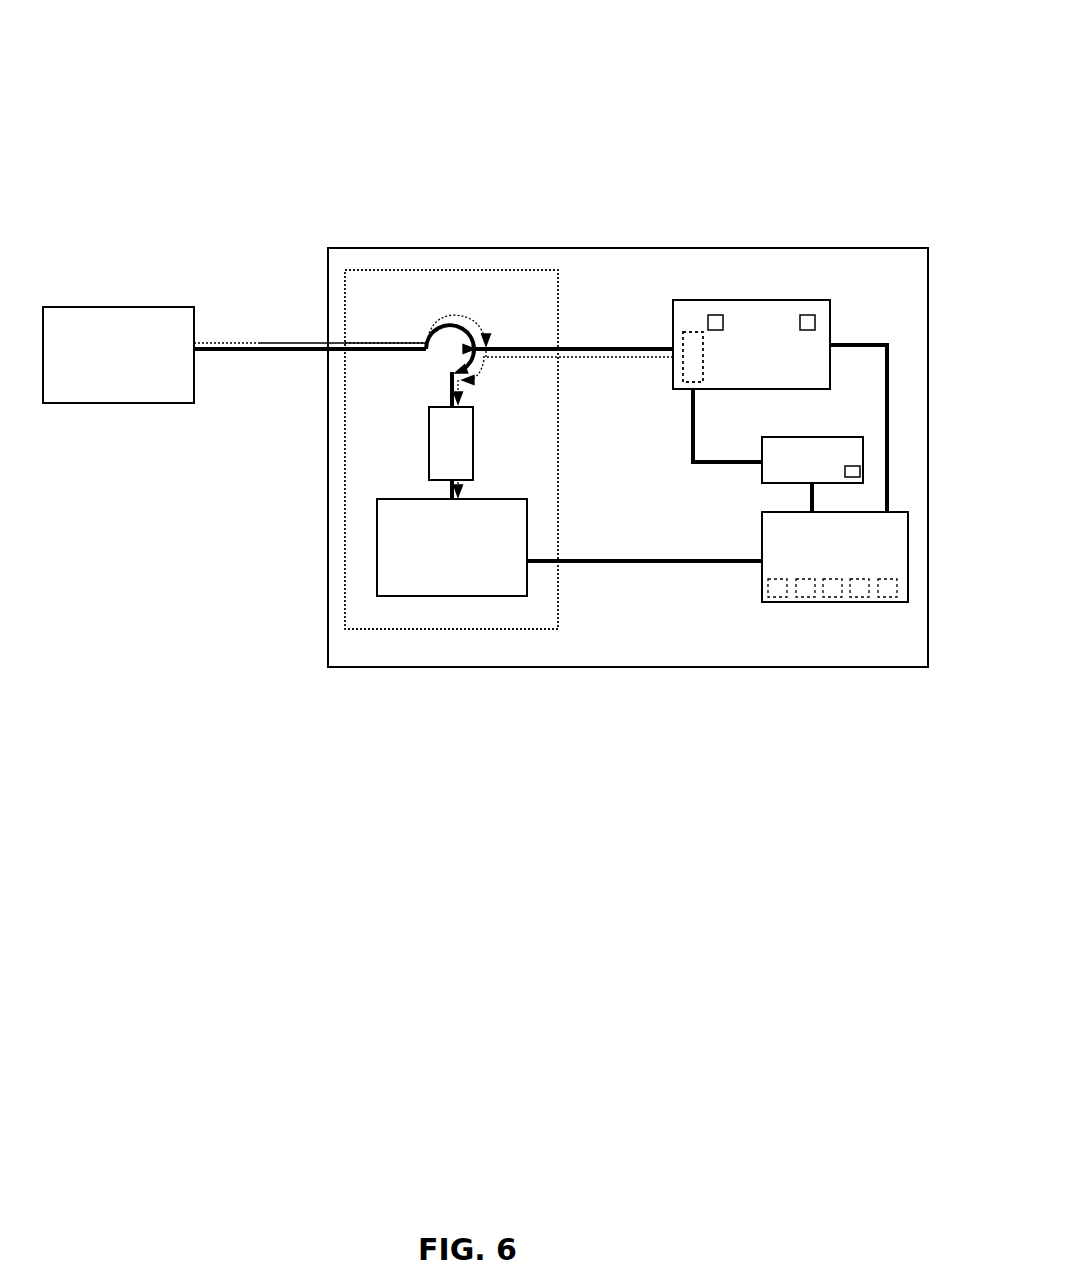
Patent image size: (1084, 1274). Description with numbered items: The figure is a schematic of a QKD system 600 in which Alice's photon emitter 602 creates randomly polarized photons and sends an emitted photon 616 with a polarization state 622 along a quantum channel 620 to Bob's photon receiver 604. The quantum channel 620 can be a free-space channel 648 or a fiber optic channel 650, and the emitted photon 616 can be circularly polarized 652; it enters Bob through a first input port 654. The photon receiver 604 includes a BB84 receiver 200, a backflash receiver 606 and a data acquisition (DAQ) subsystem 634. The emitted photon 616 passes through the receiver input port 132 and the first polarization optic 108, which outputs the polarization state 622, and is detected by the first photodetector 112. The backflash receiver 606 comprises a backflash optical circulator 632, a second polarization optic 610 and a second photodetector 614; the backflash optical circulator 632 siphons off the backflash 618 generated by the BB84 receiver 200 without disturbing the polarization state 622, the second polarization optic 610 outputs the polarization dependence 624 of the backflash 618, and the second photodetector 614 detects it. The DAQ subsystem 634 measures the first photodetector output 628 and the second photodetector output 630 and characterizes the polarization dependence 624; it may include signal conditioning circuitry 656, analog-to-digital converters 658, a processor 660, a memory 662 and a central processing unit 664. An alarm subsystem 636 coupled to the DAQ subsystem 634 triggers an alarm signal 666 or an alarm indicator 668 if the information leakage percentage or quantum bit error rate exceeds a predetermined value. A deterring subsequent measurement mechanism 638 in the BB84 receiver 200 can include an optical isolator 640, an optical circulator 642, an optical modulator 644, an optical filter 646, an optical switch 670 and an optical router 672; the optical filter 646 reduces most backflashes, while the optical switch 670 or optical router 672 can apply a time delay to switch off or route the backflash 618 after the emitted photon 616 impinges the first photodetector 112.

The QKD system 600 is at (713, 103).
The photon emitter 602 is at (93, 404).
The photon receiver 604 is at (842, 243).
The backflash receiver 606 is at (572, 497).
The second polarization optic 610 is at (473, 440).
The second photodetector 614 is at (470, 597).
The emitted photon 616 is at (240, 336).
The backflash 618 is at (570, 366).
The quantum channel 620 is at (312, 418).
The polarization state 622 is at (297, 341).
The polarization dependence 624 is at (548, 362).
The first photodetector output 628 is at (888, 360).
The second photodetector output 630 is at (600, 565).
The backflash optical circulator 632 is at (440, 360).
The data acquisition (DAQ) subsystem 634 is at (762, 532).
The alarm subsystem 636 is at (762, 450).
The deterring subsequent measurement mechanism 638 is at (693, 325).
The optical isolator 640 is at (827, 374).
The optical circulator 642 is at (693, 357).
The optical modulator 644 is at (693, 357).
The optical filter 646 is at (693, 357).
The free-space channel 648 is at (212, 352).
The fiber optic channel 650 is at (235, 352).
The circularly polarized 652 is at (380, 341).
The first input port 654 is at (318, 358).
The signal conditioning circuitry 656 is at (778, 600).
The analog-to-digital converters (ADC) 658 is at (803, 600).
The processor 660 is at (832, 600).
The memory 662 is at (860, 600).
The central processing unit (CPU) 664 is at (888, 600).
The alarm signal 666 is at (693, 432).
The alarm indicator 668 is at (848, 478).
The optical switch 670 is at (693, 357).
The optical router 672 is at (700, 383).
The first polarization optic 108 is at (715, 315).
The first photodetector 112 is at (818, 316).
The receiver input port 132 is at (664, 338).
The BB84 receiver 200 is at (810, 298).